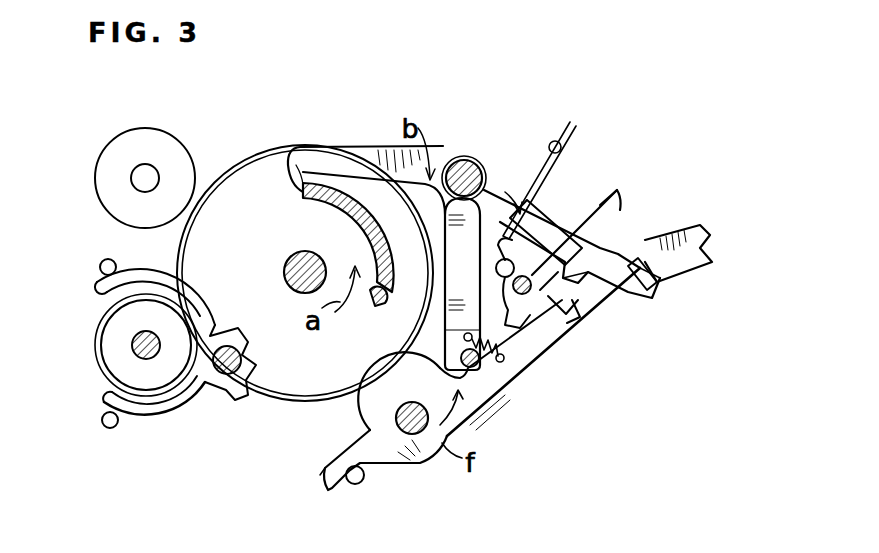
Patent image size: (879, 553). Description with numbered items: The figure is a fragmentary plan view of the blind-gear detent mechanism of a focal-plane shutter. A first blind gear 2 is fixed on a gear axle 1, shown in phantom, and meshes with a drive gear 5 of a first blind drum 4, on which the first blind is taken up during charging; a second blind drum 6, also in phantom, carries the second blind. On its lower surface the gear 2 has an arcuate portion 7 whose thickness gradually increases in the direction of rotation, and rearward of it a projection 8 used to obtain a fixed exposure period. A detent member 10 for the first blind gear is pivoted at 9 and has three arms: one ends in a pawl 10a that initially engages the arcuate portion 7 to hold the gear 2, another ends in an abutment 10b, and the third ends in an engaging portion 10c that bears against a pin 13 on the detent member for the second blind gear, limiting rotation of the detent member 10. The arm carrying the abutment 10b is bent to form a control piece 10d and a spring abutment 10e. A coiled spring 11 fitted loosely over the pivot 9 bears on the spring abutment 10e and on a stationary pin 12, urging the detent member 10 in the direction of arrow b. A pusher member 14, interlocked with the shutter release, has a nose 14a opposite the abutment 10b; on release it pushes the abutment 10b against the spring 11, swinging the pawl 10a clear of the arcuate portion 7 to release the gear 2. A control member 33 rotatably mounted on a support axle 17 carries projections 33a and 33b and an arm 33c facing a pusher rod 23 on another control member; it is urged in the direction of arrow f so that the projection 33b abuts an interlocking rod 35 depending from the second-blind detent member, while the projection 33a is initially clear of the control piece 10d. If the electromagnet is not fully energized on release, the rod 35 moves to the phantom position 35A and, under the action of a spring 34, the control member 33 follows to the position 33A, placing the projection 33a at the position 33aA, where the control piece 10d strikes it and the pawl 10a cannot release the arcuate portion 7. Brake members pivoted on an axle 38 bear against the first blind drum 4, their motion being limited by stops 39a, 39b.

The gear axle 1 is at (287, 268).
The first blind gear 2 is at (294, 402).
The first blind drum 4 is at (108, 362).
The drive gear 5 is at (95, 340).
The second blind drum 6 is at (182, 142).
The arcuate portion 7 is at (322, 210).
The projection 8 is at (372, 302).
The pivot 9 is at (470, 168).
The detent member 10 is at (445, 162).
The pawl 10a is at (296, 165).
The abutment 10b is at (652, 300).
The engaging portion 10c is at (447, 333).
The control piece 10d is at (588, 298).
The spring abutment 10e is at (528, 194).
The coiled spring 11 is at (526, 150).
The stationary pin 12 is at (562, 150).
The pin 13 is at (460, 364).
The pusher member 14 is at (690, 268).
The nose 14a is at (646, 252).
The support axle 17 is at (395, 418).
The pusher rod 23 is at (352, 485).
The control member 33 is at (413, 463).
The projection 33a is at (572, 322).
The displaced position of projection 33aA is at (574, 300).
The displaced position of control member 33A is at (552, 300).
The projection 33b is at (617, 190).
The arm 33c is at (318, 476).
The spring 34 is at (490, 354).
The interlocking rod 35 is at (528, 280).
The displaced position of interlocking rod 35A is at (552, 222).
The axle 38 is at (225, 384).
The stop 39a is at (105, 426).
The stop 39b is at (100, 262).